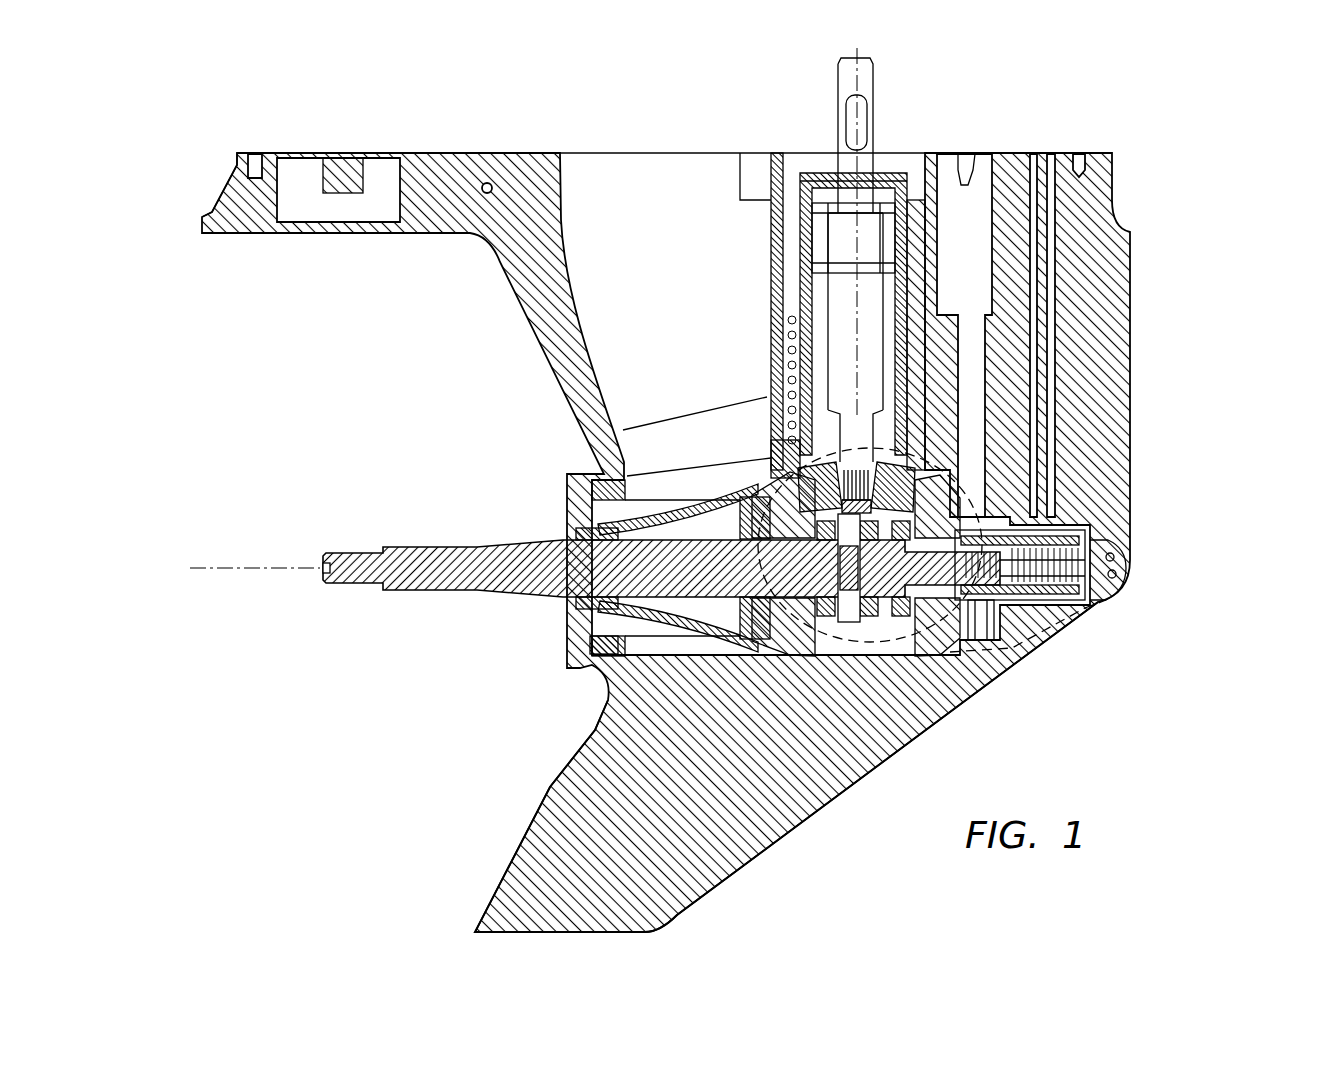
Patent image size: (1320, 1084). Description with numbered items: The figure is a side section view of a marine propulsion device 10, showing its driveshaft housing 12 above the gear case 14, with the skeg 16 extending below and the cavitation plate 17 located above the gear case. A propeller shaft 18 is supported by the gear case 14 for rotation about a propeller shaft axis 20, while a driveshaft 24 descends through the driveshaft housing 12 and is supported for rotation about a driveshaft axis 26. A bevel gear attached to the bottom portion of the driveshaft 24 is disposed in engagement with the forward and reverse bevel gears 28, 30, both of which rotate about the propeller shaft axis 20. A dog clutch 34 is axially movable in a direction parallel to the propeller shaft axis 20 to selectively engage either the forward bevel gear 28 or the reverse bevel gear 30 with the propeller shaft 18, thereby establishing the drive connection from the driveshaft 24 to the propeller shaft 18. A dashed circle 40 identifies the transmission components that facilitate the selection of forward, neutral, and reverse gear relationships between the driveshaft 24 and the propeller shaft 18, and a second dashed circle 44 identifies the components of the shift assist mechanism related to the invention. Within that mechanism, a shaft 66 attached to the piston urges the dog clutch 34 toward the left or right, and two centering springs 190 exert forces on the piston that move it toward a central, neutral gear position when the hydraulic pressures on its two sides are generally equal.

The marine propulsion device 10 is at (1175, 277).
The driveshaft housing 12 is at (1133, 432).
The gear case 14 is at (1115, 590).
The skeg 16 is at (757, 852).
The cavitation plate 17 is at (237, 236).
The propeller shaft 18 is at (447, 578).
The propeller shaft axis 20 is at (238, 570).
The driveshaft 24 is at (868, 171).
The driveshaft axis 26 is at (866, 135).
The forward bevel gear 28 is at (707, 540).
The reverse bevel gear 30 is at (955, 512).
The dog clutch 34 is at (836, 648).
The dashed circle 40 is at (846, 640).
The dashed circle 44 is at (1058, 647).
The shaft 66 is at (986, 672).
The centering springs 190 is at (1092, 614).